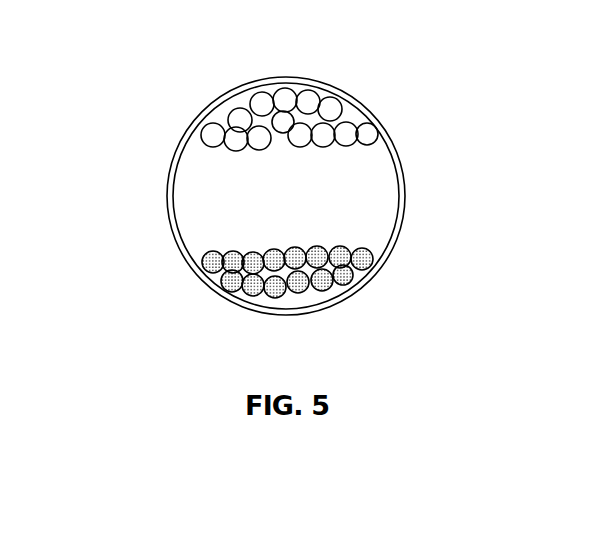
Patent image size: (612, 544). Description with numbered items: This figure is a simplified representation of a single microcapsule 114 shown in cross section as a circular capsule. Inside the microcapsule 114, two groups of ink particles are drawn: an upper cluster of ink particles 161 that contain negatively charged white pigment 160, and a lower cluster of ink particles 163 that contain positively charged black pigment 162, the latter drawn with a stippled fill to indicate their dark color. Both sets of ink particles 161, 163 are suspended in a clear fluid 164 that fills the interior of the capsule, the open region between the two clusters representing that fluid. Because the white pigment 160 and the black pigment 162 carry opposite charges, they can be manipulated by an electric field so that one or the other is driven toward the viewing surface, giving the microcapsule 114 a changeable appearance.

The microcapsule 114 is at (156, 184).
The negatively charged white pigment 160 is at (333, 110).
The ink particles 161 is at (281, 100).
The positively charged black pigment 162 is at (370, 260).
The ink particles 163 is at (222, 277).
The clear fluid 164 is at (352, 200).